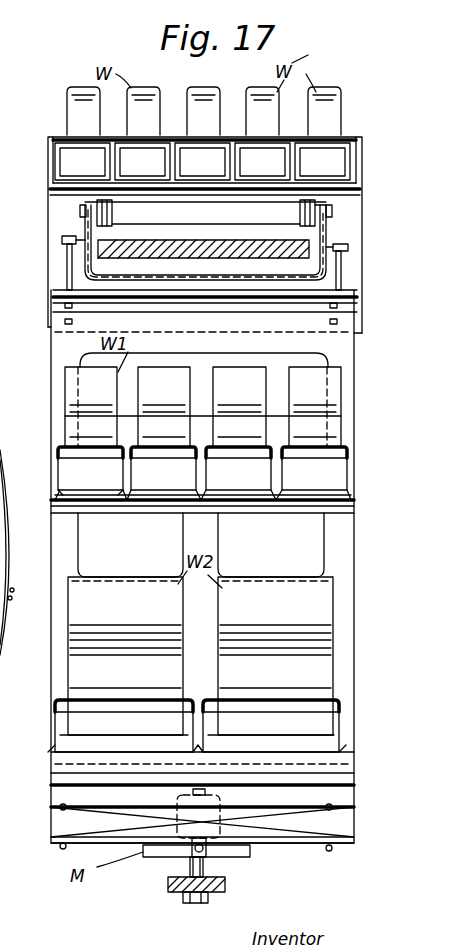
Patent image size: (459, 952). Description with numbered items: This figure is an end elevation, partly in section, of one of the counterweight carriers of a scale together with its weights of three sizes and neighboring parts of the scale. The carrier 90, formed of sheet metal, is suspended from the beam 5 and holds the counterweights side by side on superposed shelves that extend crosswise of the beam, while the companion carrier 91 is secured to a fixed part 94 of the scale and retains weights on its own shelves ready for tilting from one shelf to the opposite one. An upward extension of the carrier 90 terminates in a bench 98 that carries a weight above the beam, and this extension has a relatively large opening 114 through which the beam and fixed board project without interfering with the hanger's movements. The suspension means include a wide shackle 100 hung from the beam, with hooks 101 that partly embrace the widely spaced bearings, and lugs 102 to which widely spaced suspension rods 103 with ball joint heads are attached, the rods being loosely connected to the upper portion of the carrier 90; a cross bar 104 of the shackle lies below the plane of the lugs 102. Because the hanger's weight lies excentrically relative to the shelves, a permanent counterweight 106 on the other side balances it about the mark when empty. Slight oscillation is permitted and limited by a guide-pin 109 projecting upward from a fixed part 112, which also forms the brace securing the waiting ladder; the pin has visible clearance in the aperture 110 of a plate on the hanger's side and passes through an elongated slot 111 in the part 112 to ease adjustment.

The beam 5 is at (92, 218).
The carrier 90 is at (54, 345).
The carrier 91 is at (11, 508).
The fixed part 94 is at (97, 249).
The bench 98 is at (52, 186).
The shackle 100 is at (94, 237).
The hooks 101 is at (96, 203).
The lugs 102 is at (62, 240).
The suspension rods 103 is at (67, 266).
The cross bar 104 is at (190, 283).
The permanent counterweight 106 is at (49, 801).
The guide-pin 109 is at (206, 866).
The aperture 110 is at (178, 858).
The elongated slot 111 is at (168, 885).
The fixed part 112 is at (180, 895).
The opening 114 is at (326, 207).